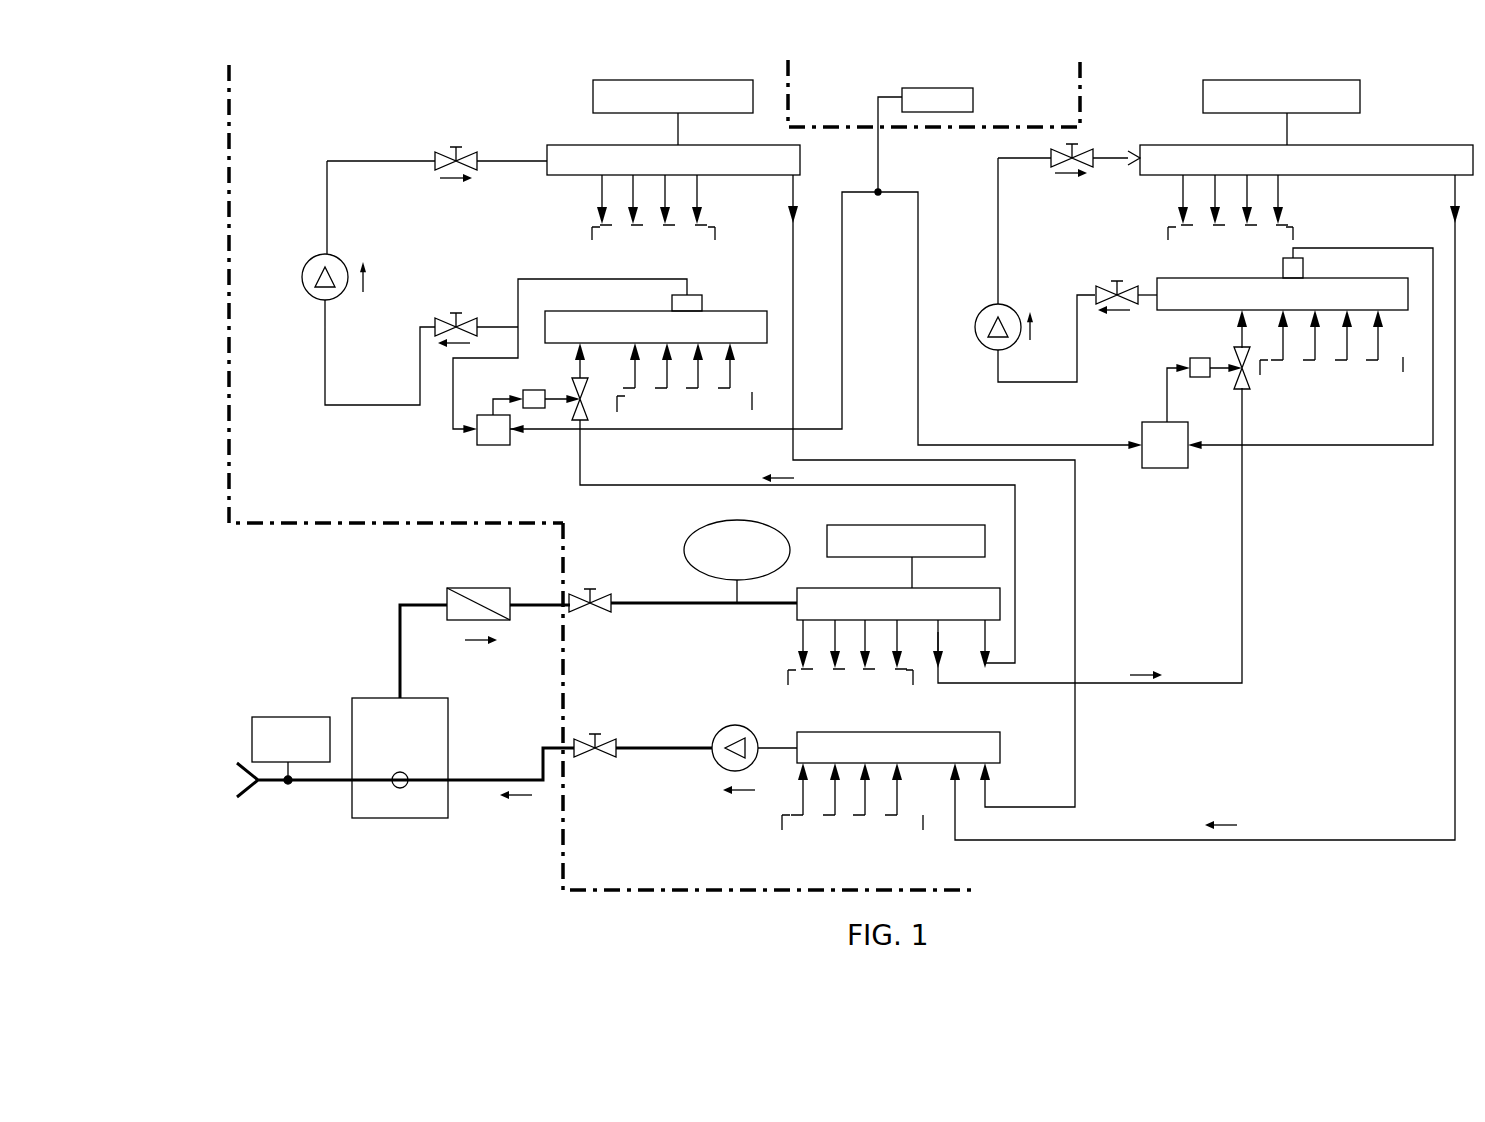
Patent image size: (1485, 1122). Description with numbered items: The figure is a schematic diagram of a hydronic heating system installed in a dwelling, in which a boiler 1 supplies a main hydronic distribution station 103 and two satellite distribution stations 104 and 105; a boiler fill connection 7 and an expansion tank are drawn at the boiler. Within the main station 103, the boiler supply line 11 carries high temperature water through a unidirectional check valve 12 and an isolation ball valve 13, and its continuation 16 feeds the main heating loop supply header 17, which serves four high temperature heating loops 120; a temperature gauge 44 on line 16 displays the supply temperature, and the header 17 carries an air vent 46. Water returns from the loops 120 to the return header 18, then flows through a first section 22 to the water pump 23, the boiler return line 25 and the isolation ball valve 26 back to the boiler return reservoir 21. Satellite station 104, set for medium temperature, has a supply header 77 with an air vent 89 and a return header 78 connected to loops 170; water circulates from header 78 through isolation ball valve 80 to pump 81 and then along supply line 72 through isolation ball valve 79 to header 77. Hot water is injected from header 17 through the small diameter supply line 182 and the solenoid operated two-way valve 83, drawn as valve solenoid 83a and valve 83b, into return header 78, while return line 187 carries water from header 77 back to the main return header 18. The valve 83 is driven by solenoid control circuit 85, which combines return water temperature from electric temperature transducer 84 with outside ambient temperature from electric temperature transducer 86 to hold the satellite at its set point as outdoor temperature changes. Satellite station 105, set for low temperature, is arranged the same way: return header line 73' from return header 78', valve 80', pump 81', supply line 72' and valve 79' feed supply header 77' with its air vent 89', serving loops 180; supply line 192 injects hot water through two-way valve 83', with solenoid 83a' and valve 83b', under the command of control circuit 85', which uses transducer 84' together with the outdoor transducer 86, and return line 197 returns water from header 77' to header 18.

The boiler 1 is at (425, 818).
The boiler fill connection 7 is at (265, 783).
The boiler supply line 11 is at (400, 605).
The unidirectional check valve 12 is at (499, 606).
The isolation ball valve 13 is at (590, 589).
The continuation of supply line 16 is at (622, 603).
The main heating loop supply header 17 is at (860, 588).
The return header 18 is at (890, 732).
The boiler return reservoir 21 is at (405, 772).
The first section of return line 22 is at (788, 748).
The water pump 23 is at (735, 725).
The boiler return line 25 is at (543, 748).
The isolation ball valve 26 is at (595, 734).
The temperature gauge 44 is at (710, 527).
The air vent 46 is at (835, 525).
The supply line 72 is at (292, 207).
The supply line 72' is at (978, 231).
The return header line 73' is at (1141, 267).
The supply header 77 is at (699, 185).
The supply header 77' is at (1306, 186).
The return header 78 is at (665, 332).
The return header 78' is at (1285, 307).
The isolation ball valve 79 is at (437, 145).
The valve 79' is at (1069, 145).
The isolation ball valve 80 is at (476, 302).
The valve 80' is at (1106, 276).
The pump 81 is at (341, 329).
The pump 81' is at (1016, 333).
The solenoid operated two-way valve 83 is at (814, 342).
The solenoid operated two-way valve 83' is at (1206, 408).
The valve solenoid 83a is at (504, 393).
The valve actuator 83a' is at (1174, 372).
The mixing valve 83b is at (559, 381).
The mixing valve 83b' is at (1253, 367).
The electric temperature transducer 84 is at (631, 301).
The electric temperature transducer 84' is at (1310, 348).
The solenoid control circuit 85 is at (477, 407).
The solenoid control circuit 85' is at (1157, 476).
The electric temperature transducer 86 is at (973, 97).
The air vent 89 is at (673, 96).
The air vent 89' is at (1281, 96).
The main hydronic distribution station 103 is at (563, 876).
The satellite distribution station 104 is at (425, 110).
The satellite distribution station 105 is at (1103, 85).
The heating loops 120 is at (782, 850).
The loops 170 is at (778, 390).
The loops 180 is at (1368, 400).
The station 104 supply line 182 is at (710, 485).
The station 104 return line 187 is at (1077, 525).
The station 105 supply line 192 is at (1088, 683).
The station 105 return line 197 is at (1378, 840).